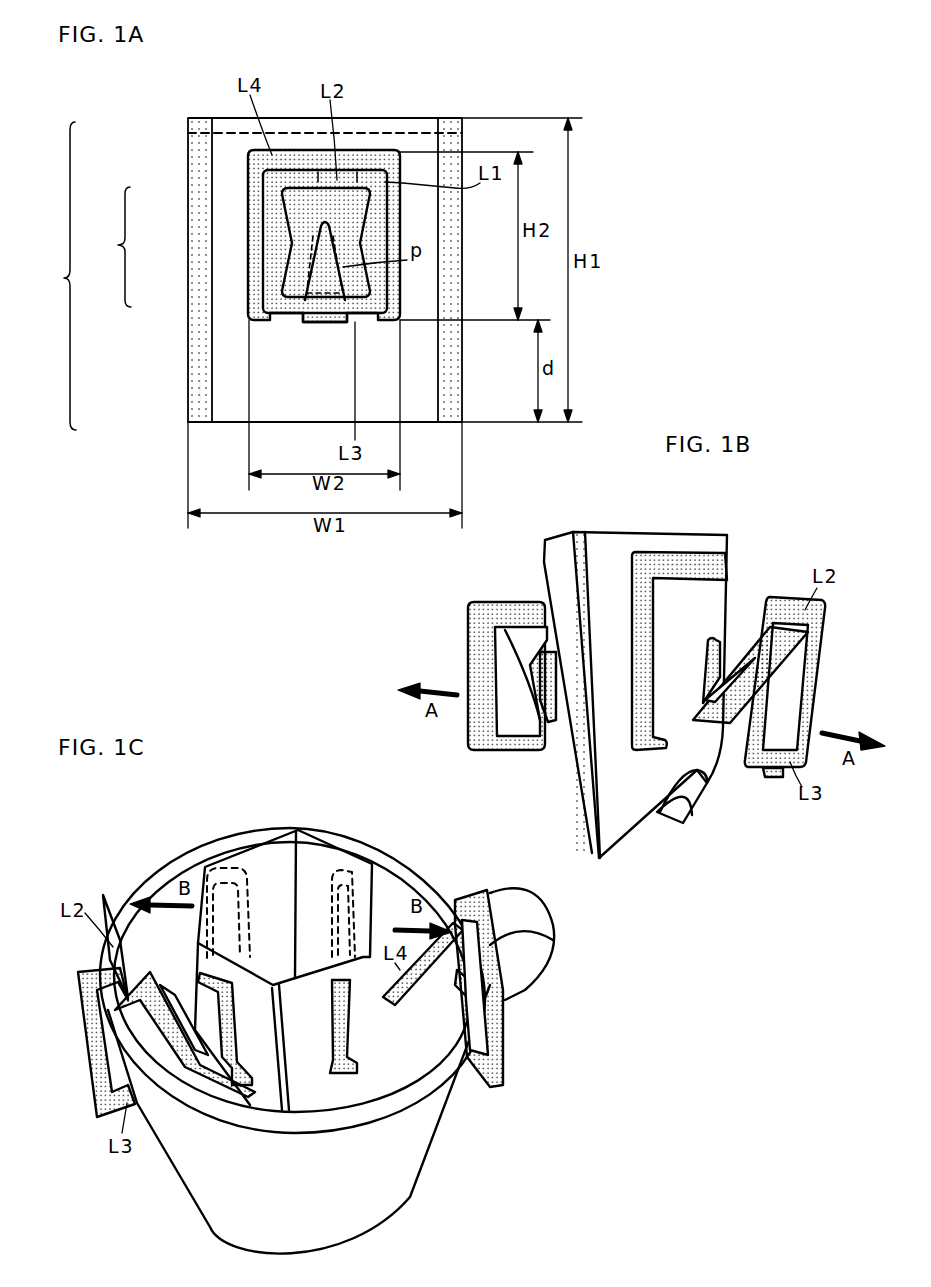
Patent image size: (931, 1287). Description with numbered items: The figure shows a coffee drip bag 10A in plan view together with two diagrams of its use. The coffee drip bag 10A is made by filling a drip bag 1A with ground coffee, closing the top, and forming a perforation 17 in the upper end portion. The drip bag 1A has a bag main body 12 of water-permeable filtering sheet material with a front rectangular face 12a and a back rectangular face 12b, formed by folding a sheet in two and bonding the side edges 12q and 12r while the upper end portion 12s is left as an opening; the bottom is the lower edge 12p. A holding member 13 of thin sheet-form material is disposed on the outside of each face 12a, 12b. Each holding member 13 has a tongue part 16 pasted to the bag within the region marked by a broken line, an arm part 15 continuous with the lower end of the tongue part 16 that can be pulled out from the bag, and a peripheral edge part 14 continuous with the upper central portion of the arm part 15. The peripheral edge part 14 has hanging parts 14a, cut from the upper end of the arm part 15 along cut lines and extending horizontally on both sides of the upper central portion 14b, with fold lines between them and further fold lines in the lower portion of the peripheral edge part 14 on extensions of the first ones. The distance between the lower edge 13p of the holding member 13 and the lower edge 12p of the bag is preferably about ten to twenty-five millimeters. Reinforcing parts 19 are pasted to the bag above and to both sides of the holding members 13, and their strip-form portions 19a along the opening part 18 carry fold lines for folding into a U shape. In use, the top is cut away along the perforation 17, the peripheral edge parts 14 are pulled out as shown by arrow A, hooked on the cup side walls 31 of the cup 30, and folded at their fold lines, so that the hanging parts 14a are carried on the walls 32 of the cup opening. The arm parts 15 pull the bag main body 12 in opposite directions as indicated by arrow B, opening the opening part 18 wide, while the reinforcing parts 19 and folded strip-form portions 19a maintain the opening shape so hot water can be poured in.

In FIG. 1A, the drip bag 1A is at (55, 276).
In FIG. 1A, the coffee drip bag 10A is at (646, 373).
In FIG. 1A, the bag main body 12 is at (227, 362).
In FIG. 1B, the bag main body 12 is at (625, 815).
In FIG. 1C, the bag main body 12 is at (273, 853).
In FIG. 1B, the front rectangular face 12a is at (560, 547).
In FIG. 1B, the back rectangular face 12b is at (690, 540).
In FIG. 1A, the lower edge of bag main body 12p is at (220, 423).
In FIG. 1A, the side edge 12q is at (195, 395).
In FIG. 1A, the side edge 12r is at (455, 397).
In FIG. 1A, the upper end portion 12s is at (233, 117).
In FIG. 1B, the upper end portion 12s is at (617, 527).
In FIG. 1A, the holding member 13 is at (244, 191).
In FIG. 1C, the holding member 13 is at (346, 1003).
In FIG. 1A, the lower edge of holding member 13p is at (315, 323).
In FIG. 1A, the peripheral edge part 14 is at (277, 227).
In FIG. 1B, the peripheral edge part 14 is at (817, 685).
In FIG. 1C, the peripheral edge part 14 is at (503, 1068).
In FIG. 1A, the hanging part 14a is at (357, 173).
In FIG. 1C, the hanging part 14a is at (473, 983).
In FIG. 1A, the upper central portion 14b is at (322, 178).
In FIG. 1A, the arm part 15 is at (298, 255).
In FIG. 1B, the arm part 15 is at (753, 630).
In FIG. 1C, the arm part 15 is at (405, 1042).
In FIG. 1A, the tongue part 16 is at (317, 275).
In FIG. 1B, the tongue part 16 is at (723, 653).
In FIG. 1A, the perforation 17 is at (392, 133).
In FIG. 1A, the opening part 18 is at (418, 150).
In FIG. 1C, the opening part 18 is at (247, 847).
In FIG. 1A, the reinforcing part 19 is at (250, 183).
In FIG. 1B, the reinforcing part 19 is at (679, 651).
In FIG. 1C, the reinforcing part 19 is at (347, 1047).
In FIG. 1A, the strip-form portion 19a is at (298, 157).
In FIG. 1B, the strip-form portion 19a is at (712, 556).
In FIG. 1C, the strip-form portion 19a is at (378, 930).
In FIG. 1C, the cup 30 is at (339, 1033).
In FIG. 1C, the cup side wall 31 is at (452, 1102).
In FIG. 1C, the wall of opening part of cup 32 is at (423, 867).